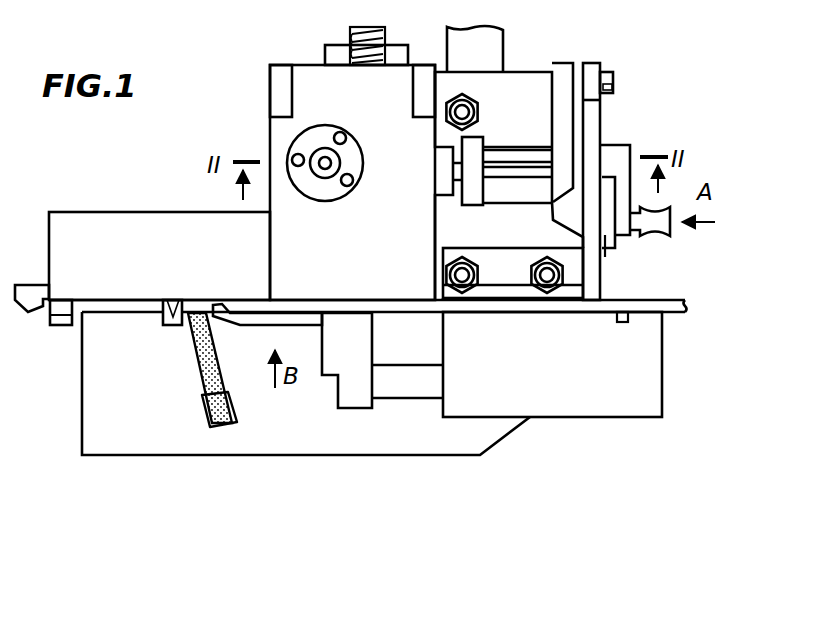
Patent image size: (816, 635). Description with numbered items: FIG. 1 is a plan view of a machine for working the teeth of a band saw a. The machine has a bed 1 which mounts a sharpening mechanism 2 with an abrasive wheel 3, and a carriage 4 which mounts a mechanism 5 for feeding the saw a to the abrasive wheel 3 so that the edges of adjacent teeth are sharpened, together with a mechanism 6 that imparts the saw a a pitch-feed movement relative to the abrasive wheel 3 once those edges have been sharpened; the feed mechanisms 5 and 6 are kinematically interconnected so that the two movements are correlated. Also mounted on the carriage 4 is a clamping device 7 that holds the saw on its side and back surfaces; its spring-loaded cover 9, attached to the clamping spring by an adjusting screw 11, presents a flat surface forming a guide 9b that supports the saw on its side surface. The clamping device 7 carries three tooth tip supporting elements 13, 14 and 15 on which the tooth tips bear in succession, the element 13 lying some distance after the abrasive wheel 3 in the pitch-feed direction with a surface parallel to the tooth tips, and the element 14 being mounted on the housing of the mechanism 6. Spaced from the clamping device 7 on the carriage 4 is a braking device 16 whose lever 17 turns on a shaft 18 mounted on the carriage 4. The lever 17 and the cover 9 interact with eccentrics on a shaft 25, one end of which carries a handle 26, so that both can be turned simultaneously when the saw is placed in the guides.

The bed 1 is at (82, 417).
The sharpening mechanism 2 is at (237, 405).
The abrasive wheel 3 is at (196, 366).
The carriage 4 is at (452, 34).
The mechanism for feeding the saw 5 is at (517, 70).
The pitch-feed mechanism 6 is at (606, 420).
The clamping device 7 is at (268, 143).
The cover 9 is at (270, 118).
The guide 9b is at (93, 212).
The adjusting screw 11 is at (330, 160).
The tooth tip supporting element 13 is at (63, 326).
The tooth tip supporting element 14 is at (617, 318).
The tooth tip supporting element 15 is at (172, 322).
The braking device 16 is at (608, 238).
The lever 17 is at (597, 121).
The shaft 18 is at (613, 80).
The shaft 25 is at (497, 150).
The handle 26 is at (663, 232).
The band saw a is at (32, 287).